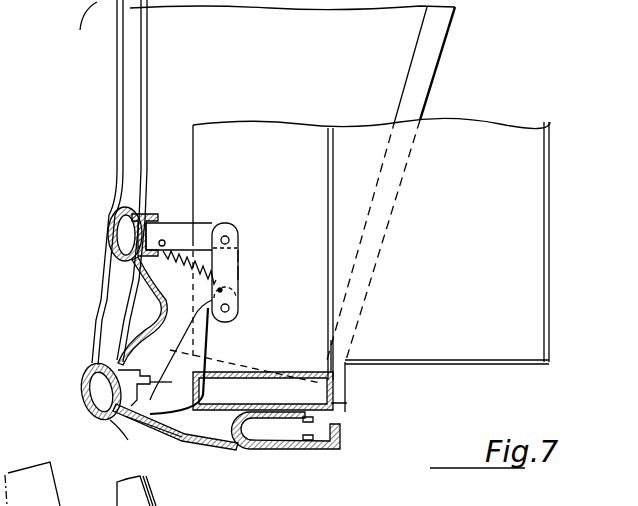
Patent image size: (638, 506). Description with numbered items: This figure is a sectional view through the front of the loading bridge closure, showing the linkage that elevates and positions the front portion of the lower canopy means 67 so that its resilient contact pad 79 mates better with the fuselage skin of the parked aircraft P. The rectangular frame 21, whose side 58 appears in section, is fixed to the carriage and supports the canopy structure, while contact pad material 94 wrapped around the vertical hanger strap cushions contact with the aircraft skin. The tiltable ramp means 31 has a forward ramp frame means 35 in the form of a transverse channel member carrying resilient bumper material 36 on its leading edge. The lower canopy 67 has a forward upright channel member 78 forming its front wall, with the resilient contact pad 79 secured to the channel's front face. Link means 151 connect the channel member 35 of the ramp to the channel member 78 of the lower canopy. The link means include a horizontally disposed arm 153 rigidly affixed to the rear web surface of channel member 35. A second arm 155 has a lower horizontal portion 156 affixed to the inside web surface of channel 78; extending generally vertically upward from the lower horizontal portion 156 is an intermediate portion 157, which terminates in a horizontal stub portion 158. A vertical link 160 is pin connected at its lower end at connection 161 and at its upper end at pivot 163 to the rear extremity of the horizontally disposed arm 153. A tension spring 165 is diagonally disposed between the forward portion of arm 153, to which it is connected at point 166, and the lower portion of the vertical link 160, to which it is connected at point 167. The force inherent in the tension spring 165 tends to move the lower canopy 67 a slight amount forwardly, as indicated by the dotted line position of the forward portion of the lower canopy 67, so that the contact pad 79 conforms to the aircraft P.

The aircraft P is at (74, 9).
The contact pad material 94 is at (132, 53).
The rectangular frame 21 is at (268, 146).
The side of rectangular frame 58 is at (304, 169).
The horizontally disposed arm 153 is at (170, 220).
The spring connection on arm 166 is at (165, 241).
The ramp means 31 is at (238, 222).
The pivot 163 is at (236, 236).
The tension spring 165 is at (238, 256).
The vertical link 160 is at (238, 273).
The spring connection on vertical link 167 is at (223, 291).
The link means 151 is at (246, 297).
The lower pin connection 161 is at (236, 313).
The horizontal stub portion 158 is at (209, 318).
The intermediate portion 157 is at (200, 348).
The second arm 155 is at (177, 382).
The forward ramp frame means 35 is at (151, 218).
The resilient bumper material 36 is at (107, 227).
The resilient contact pad 79 is at (82, 388).
The forward upright channel member 78 is at (110, 420).
The lower horizontal portion 156 is at (153, 403).
The lower canopy means 67 is at (236, 450).